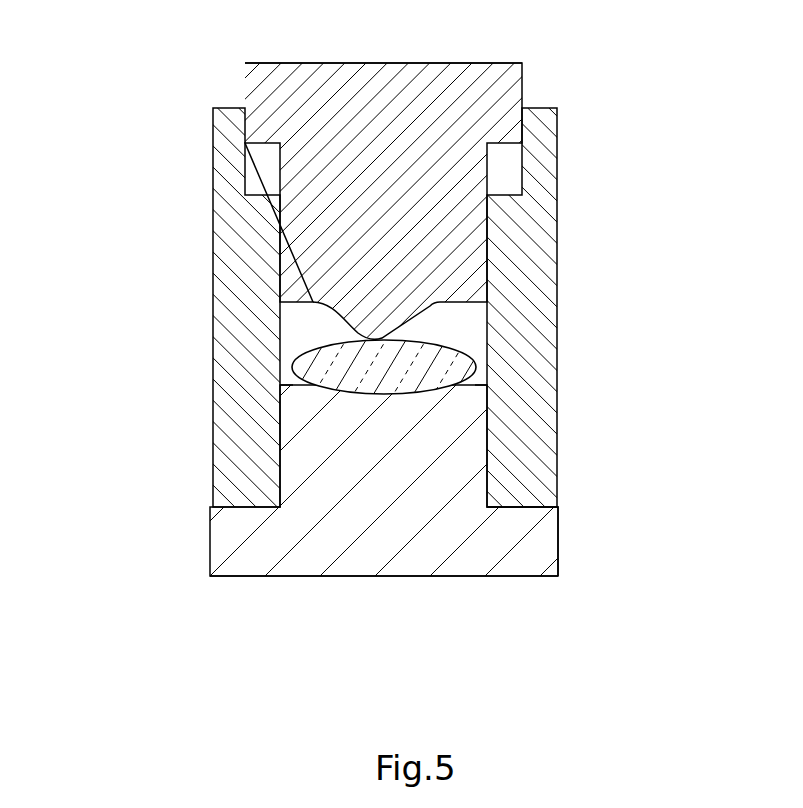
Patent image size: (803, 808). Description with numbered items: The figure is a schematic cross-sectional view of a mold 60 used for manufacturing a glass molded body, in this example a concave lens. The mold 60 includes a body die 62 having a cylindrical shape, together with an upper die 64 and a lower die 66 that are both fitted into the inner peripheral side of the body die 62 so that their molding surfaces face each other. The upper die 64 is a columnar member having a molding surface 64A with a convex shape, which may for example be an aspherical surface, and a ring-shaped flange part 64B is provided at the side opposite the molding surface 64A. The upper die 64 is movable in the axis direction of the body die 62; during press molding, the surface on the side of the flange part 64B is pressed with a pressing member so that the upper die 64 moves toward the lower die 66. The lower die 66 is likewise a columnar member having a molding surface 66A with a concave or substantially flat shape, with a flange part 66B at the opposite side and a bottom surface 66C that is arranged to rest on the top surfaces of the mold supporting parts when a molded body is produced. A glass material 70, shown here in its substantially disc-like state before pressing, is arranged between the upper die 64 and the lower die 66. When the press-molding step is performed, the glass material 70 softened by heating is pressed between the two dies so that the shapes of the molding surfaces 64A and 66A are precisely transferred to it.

The mold 60 is at (147, 56).
The body die 62 is at (522, 247).
The upper die 64 is at (314, 106).
The molding surface 64A is at (340, 327).
The flange part 64B is at (503, 88).
The lower die 66 is at (335, 535).
The molding surface 66A is at (397, 390).
The flange part 66B is at (524, 541).
The bottom surface 66C is at (469, 581).
The glass material 70 is at (343, 345).